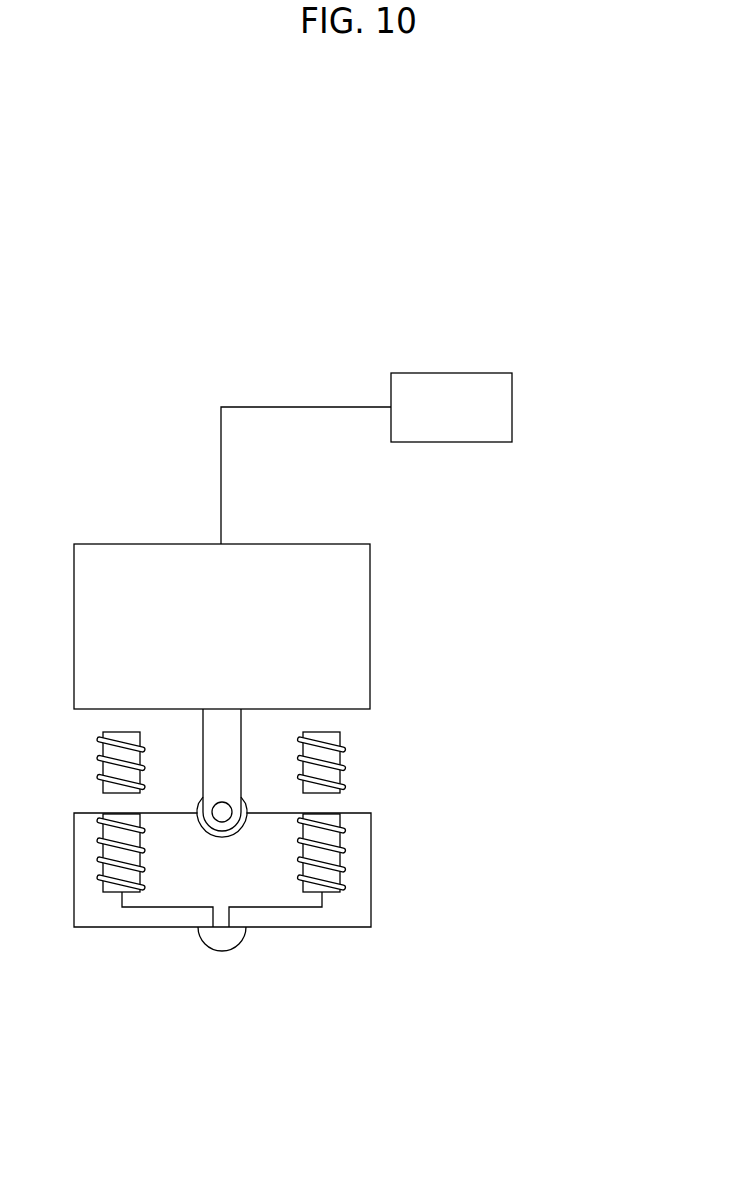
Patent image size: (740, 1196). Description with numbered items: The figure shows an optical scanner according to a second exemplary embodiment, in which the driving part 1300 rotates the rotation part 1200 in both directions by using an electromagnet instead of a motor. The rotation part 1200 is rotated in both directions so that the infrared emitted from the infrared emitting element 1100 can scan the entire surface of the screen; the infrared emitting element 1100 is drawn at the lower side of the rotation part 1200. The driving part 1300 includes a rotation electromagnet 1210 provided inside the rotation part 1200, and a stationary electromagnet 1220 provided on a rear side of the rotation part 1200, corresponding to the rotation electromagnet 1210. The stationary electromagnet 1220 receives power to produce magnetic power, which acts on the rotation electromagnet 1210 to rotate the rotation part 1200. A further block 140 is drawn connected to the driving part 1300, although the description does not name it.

The controller 140 is at (512, 405).
The driving part 1300 is at (370, 627).
The stationary electromagnet 1220 is at (346, 765).
The rotation electromagnet 1210 is at (346, 848).
The rotation part 1200 is at (371, 899).
The infrared emitting element 1100 is at (220, 951).